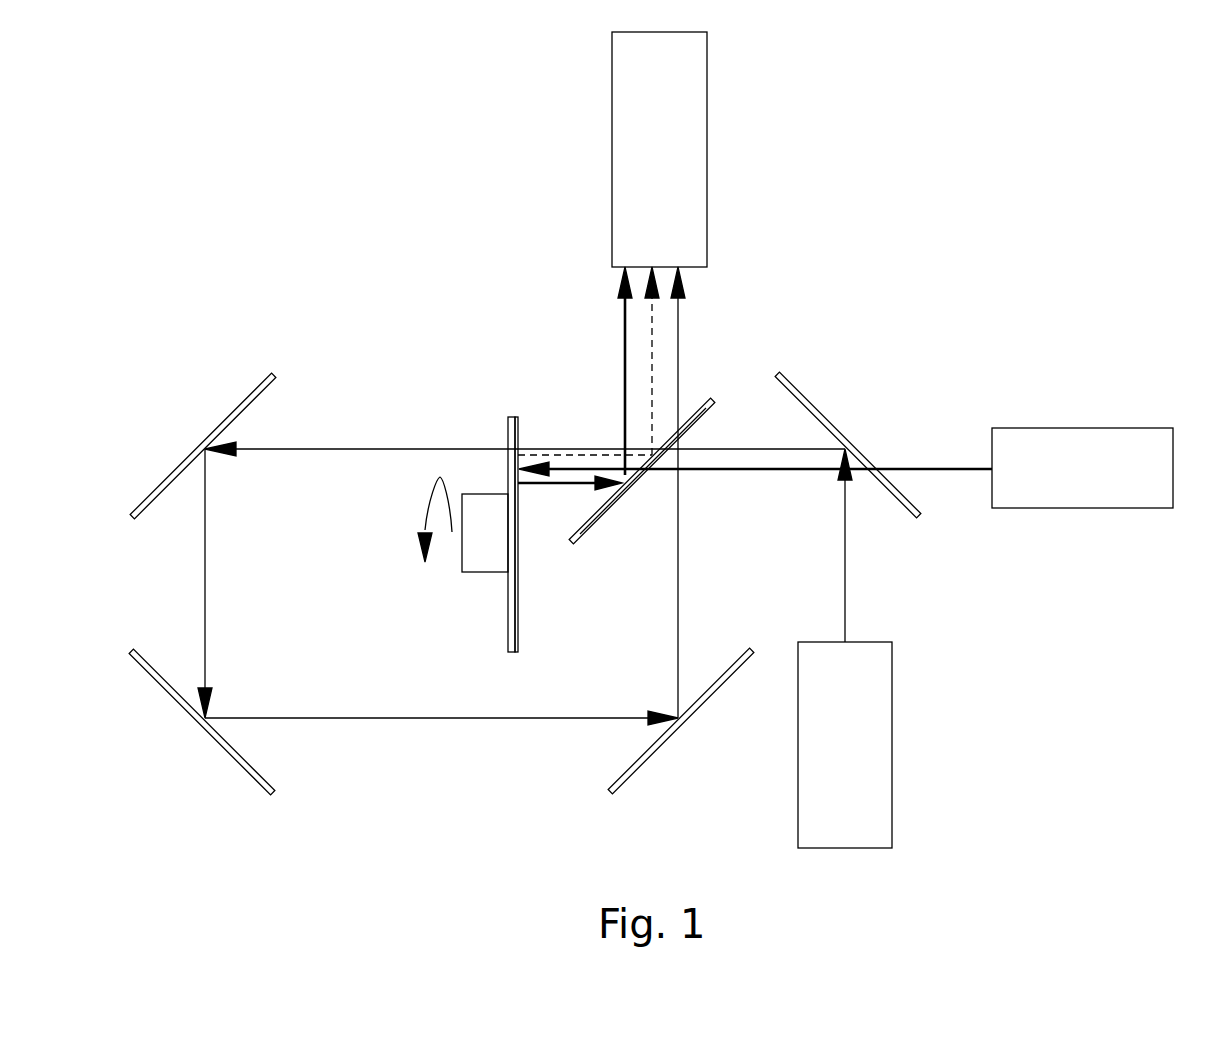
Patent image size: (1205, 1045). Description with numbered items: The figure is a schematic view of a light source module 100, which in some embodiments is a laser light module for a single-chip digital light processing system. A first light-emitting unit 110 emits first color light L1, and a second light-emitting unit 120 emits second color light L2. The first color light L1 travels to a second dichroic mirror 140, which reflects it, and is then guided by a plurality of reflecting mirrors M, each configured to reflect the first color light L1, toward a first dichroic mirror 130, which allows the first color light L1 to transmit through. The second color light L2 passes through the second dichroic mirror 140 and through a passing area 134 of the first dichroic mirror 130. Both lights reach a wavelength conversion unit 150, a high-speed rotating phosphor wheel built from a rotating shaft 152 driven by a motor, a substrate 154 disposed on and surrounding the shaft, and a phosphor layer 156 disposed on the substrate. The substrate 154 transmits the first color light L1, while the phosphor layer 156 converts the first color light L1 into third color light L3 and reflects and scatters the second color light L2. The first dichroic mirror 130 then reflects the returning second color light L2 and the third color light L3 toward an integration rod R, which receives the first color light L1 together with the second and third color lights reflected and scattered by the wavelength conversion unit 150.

The light source module 100 is at (1150, 82).
The first light-emitting unit 110 is at (878, 703).
The second light-emitting unit 120 is at (1050, 442).
The first dichroic mirror 130 is at (707, 400).
The passing area 134 is at (663, 480).
The second dichroic mirror 140 is at (787, 382).
The wavelength conversion unit 150 is at (465, 567).
The rotating shaft 152 is at (480, 573).
The substrate 154 is at (512, 420).
The phosphor layer 156 is at (518, 420).
The integration rod R is at (622, 152).
The reflecting mirror M is at (228, 413).
The first color light L1 is at (847, 584).
The second color light L2 is at (942, 468).
The third color light L3 is at (652, 366).